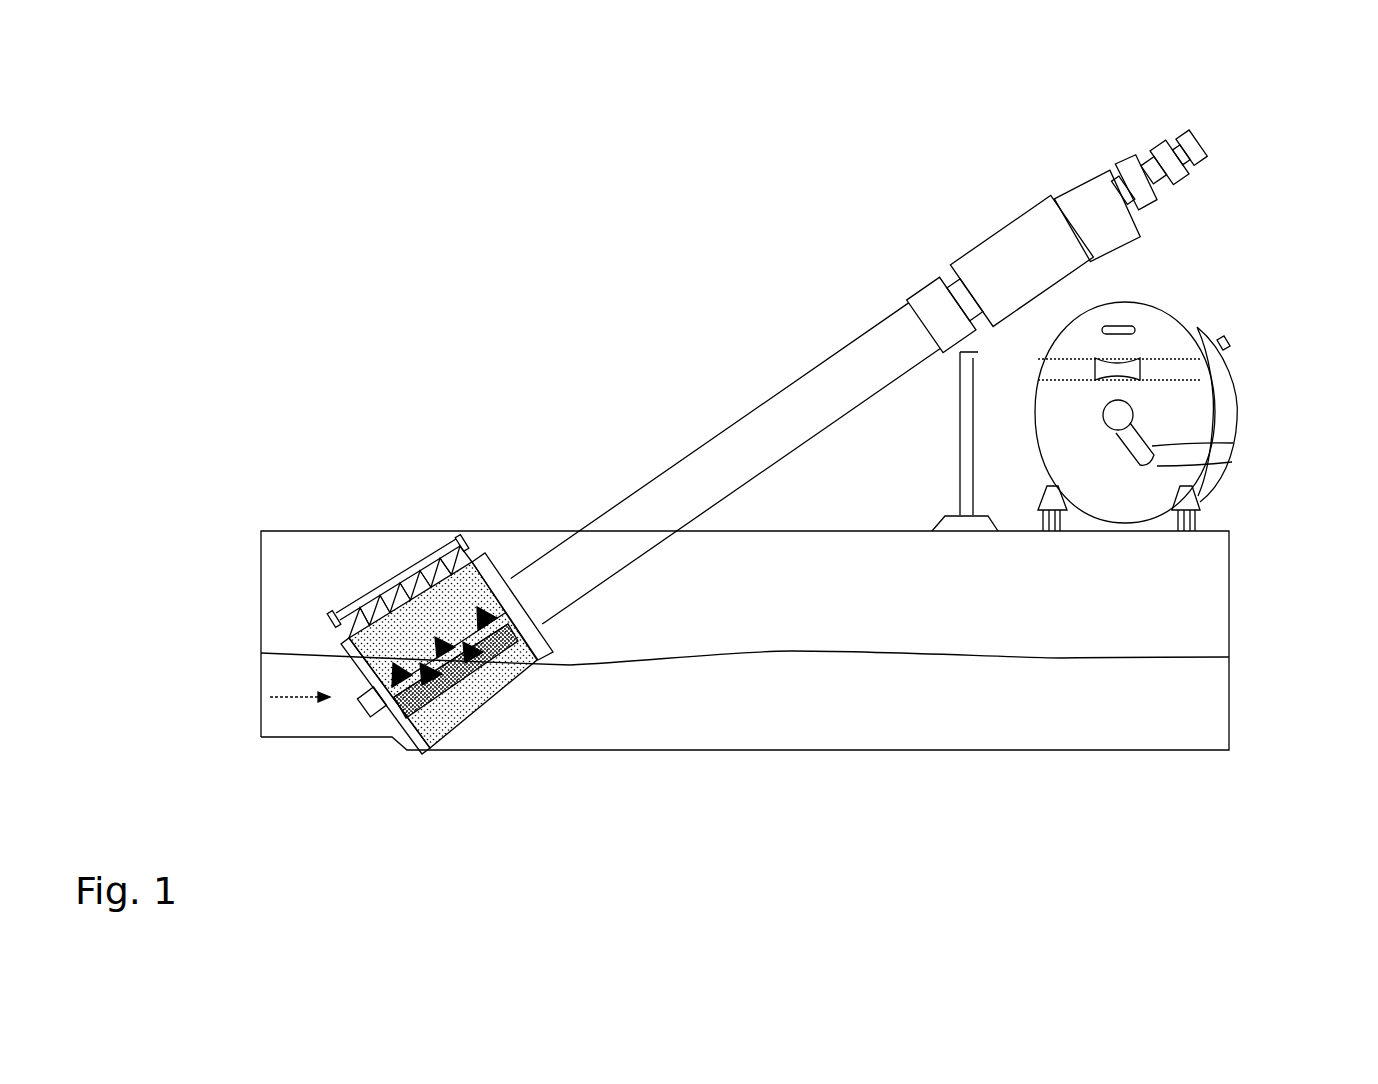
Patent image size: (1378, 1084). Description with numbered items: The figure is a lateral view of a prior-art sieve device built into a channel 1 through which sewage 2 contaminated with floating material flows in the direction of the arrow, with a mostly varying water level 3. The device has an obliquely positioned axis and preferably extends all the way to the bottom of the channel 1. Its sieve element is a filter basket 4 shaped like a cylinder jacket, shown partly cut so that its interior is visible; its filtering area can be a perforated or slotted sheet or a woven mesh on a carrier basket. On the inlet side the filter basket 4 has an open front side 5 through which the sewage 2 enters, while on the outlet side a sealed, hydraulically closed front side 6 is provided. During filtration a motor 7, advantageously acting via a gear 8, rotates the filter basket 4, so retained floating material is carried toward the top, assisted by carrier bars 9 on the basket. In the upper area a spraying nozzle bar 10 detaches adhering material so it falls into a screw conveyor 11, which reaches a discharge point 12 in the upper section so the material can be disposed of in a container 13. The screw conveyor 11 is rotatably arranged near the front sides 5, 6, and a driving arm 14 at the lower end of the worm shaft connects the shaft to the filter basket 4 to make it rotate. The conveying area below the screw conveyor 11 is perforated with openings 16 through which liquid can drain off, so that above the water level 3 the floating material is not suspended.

The channel 1 is at (300, 530).
The sewage 2 is at (811, 714).
The water level 3 is at (1197, 657).
The filter basket 4 is at (470, 560).
The open front side 5 is at (412, 727).
The closed front side 6 is at (553, 640).
The motor 7 is at (1205, 157).
The gear 8 is at (1120, 163).
The carrier bars 9 is at (503, 690).
The spraying nozzle bar 10 is at (430, 553).
The screw conveyor 11 is at (540, 590).
The discharge point 12 is at (1138, 218).
The container 13 is at (1220, 408).
The driving arm 14 is at (347, 647).
The openings 16 is at (447, 680).